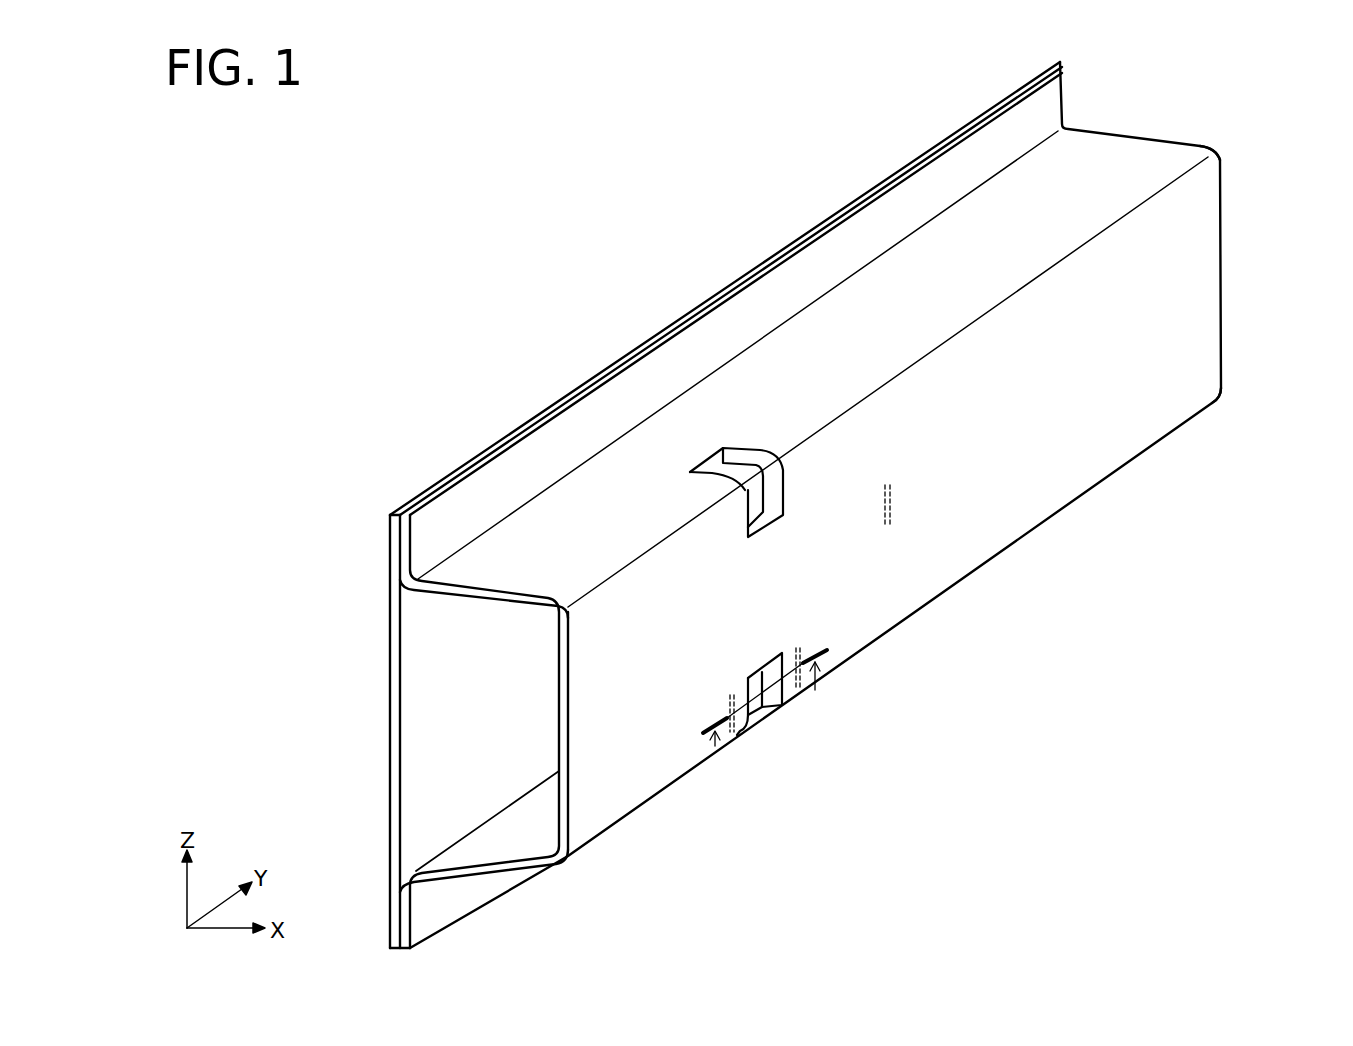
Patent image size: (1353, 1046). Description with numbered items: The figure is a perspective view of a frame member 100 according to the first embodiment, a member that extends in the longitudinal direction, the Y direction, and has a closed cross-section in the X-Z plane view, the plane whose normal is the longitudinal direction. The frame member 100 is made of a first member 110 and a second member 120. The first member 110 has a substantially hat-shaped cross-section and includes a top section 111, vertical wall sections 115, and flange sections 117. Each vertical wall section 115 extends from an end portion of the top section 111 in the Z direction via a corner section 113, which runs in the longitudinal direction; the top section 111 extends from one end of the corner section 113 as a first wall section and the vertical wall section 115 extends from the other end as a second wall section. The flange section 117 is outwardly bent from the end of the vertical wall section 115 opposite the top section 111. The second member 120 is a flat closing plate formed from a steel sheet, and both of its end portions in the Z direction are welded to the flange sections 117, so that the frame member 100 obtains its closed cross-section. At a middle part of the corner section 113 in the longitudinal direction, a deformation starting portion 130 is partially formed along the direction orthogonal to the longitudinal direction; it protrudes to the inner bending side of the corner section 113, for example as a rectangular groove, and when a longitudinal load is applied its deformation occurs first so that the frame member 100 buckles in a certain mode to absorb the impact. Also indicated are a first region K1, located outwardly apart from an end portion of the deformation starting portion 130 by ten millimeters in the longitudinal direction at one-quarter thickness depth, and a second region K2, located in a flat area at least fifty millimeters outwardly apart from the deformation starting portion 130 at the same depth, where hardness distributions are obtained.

The frame member 100 is at (511, 164).
The first member 110 is at (847, 503).
The top section 111 is at (1207, 283).
The corner section 113 is at (1219, 146).
The vertical wall section 115 is at (1133, 152).
The flange section 117 is at (978, 137).
The second member 120 is at (390, 731).
The deformation starting portion 130 is at (713, 444).
The first region K1 is at (797, 648).
The second region K2 is at (885, 510).